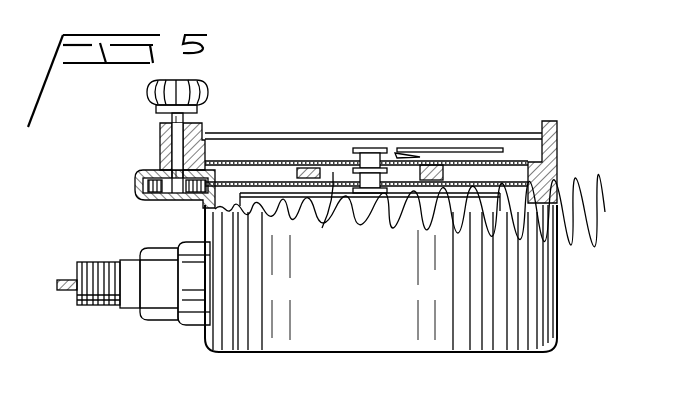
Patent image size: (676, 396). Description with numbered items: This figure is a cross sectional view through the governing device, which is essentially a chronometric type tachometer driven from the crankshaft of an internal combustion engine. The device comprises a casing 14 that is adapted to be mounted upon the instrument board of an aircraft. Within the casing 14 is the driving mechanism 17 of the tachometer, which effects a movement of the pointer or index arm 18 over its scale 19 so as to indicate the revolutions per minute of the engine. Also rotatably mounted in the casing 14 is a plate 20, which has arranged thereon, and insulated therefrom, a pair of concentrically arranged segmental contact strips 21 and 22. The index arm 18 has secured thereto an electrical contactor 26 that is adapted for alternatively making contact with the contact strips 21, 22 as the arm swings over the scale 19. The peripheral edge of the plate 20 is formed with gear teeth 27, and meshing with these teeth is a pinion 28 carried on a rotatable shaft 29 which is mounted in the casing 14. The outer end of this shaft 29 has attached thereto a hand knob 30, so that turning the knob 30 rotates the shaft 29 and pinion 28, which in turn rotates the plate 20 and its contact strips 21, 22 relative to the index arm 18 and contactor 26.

The casing 14 is at (540, 262).
The driving mechanism 17 is at (475, 196).
The index arm 18 is at (455, 150).
The scale 19 is at (517, 160).
The plate 20 is at (243, 183).
The segmental contact strip 21 is at (315, 205).
The segmental contact strip 22 is at (420, 192).
The electrical contactor 26 is at (440, 160).
The gear teeth 27 is at (558, 165).
The pinion 28 is at (140, 198).
The rotatable shaft 29 is at (165, 143).
The hand knob 30 is at (208, 92).